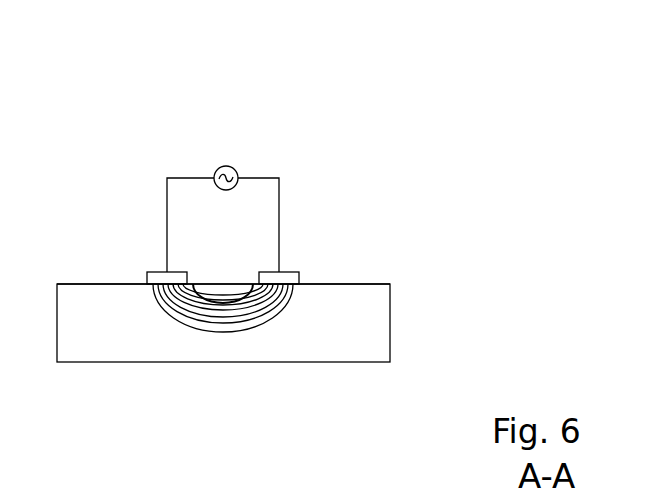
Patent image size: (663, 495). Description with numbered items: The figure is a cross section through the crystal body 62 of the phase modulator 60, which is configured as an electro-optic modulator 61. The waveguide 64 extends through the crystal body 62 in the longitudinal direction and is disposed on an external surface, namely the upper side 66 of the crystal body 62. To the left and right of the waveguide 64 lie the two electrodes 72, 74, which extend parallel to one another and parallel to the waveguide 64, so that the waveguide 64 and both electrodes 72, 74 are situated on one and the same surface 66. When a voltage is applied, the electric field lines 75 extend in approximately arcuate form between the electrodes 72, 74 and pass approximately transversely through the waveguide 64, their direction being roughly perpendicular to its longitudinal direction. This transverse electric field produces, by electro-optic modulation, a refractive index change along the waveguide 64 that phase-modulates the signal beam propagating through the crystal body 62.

The phase modulator 60 is at (178, 130).
The electro-optic modulator 61 is at (273, 160).
The crystal body 62 is at (320, 340).
The waveguide 64 is at (225, 300).
The upper side 66 is at (338, 283).
The electrode 72 is at (290, 270).
The electrode 74 is at (155, 270).
The electric field lines 75 is at (197, 323).